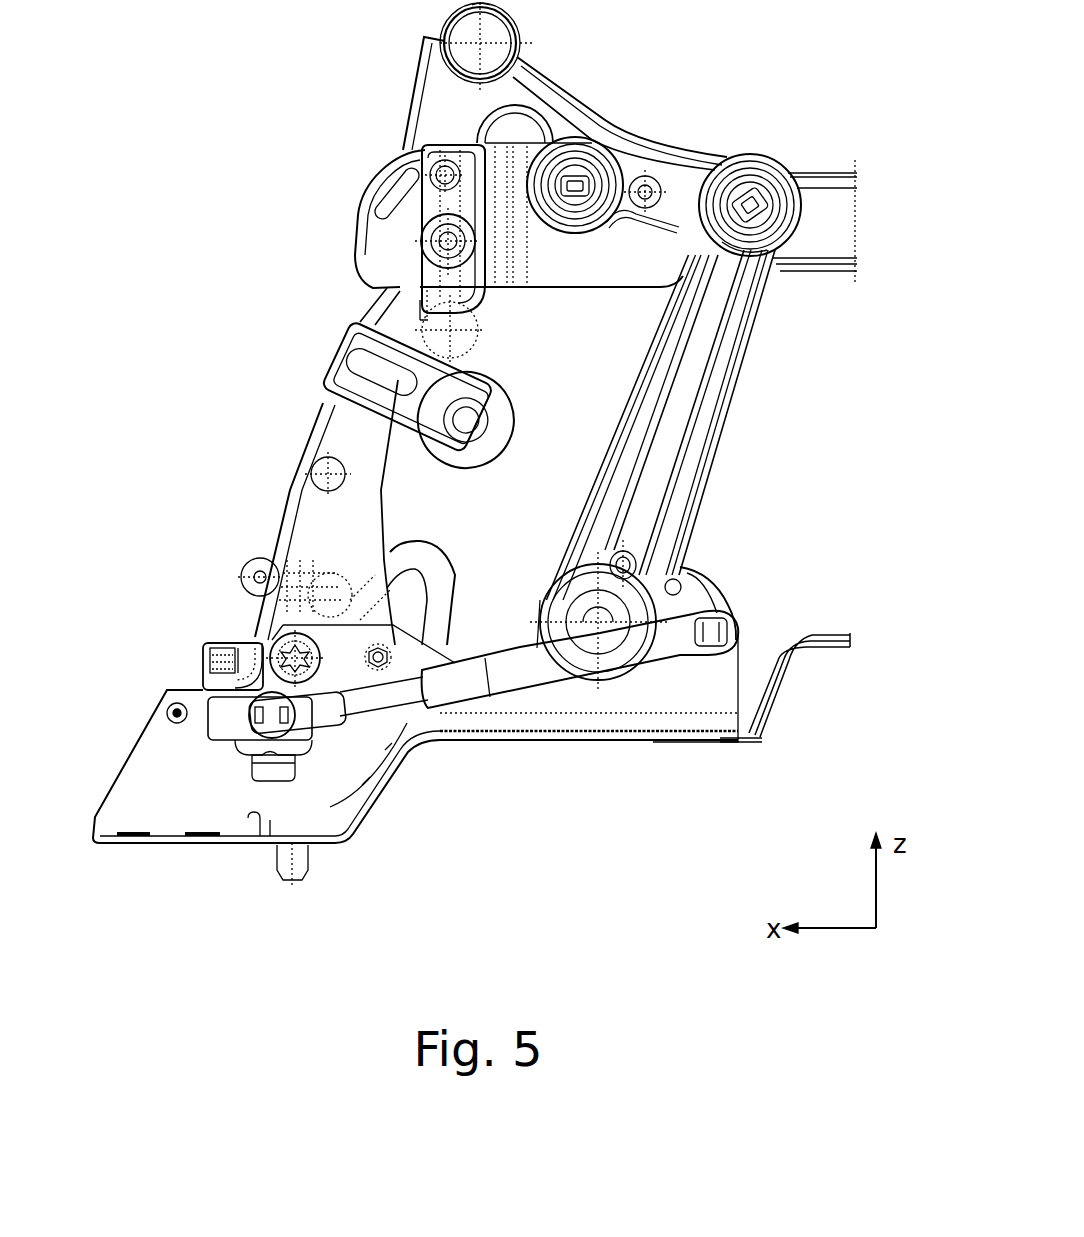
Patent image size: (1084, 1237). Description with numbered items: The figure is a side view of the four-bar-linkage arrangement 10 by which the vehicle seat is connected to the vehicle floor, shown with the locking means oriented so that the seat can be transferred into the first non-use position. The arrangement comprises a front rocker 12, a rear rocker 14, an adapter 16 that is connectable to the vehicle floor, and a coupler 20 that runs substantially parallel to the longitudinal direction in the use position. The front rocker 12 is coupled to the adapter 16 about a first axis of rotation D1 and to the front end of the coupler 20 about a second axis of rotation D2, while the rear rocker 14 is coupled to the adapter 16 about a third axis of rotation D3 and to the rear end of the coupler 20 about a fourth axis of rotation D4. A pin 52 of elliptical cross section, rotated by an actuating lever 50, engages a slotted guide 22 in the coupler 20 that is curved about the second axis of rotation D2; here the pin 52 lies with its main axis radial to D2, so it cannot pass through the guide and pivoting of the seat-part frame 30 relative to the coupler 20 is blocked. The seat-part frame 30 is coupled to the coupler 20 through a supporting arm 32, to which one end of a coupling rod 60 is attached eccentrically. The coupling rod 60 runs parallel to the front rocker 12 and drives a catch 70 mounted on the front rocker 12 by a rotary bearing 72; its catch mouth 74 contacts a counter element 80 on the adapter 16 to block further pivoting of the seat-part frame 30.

The four-bar-linkage arrangement 10 is at (752, 428).
The front rocker 12 is at (322, 537).
The rear rocker 14 is at (720, 357).
The adapter 16 is at (172, 815).
The coupler 20 is at (668, 177).
The slotted guide 22 is at (370, 195).
The seat-part frame 30 is at (520, 97).
The supporting arm 32 is at (458, 333).
The actuating lever 50 is at (421, 243).
The pin 52 is at (418, 150).
The coupling rod 60 is at (347, 443).
The catch 70 is at (430, 570).
The rotary bearing 72 is at (337, 613).
The catch mouth 74 is at (410, 610).
The counter element 80 is at (380, 665).
The first axis of rotation D1 is at (248, 623).
The second axis of rotation D2 is at (408, 249).
The third axis of rotation D3 is at (600, 622).
The fourth axis of rotation D4 is at (745, 195).